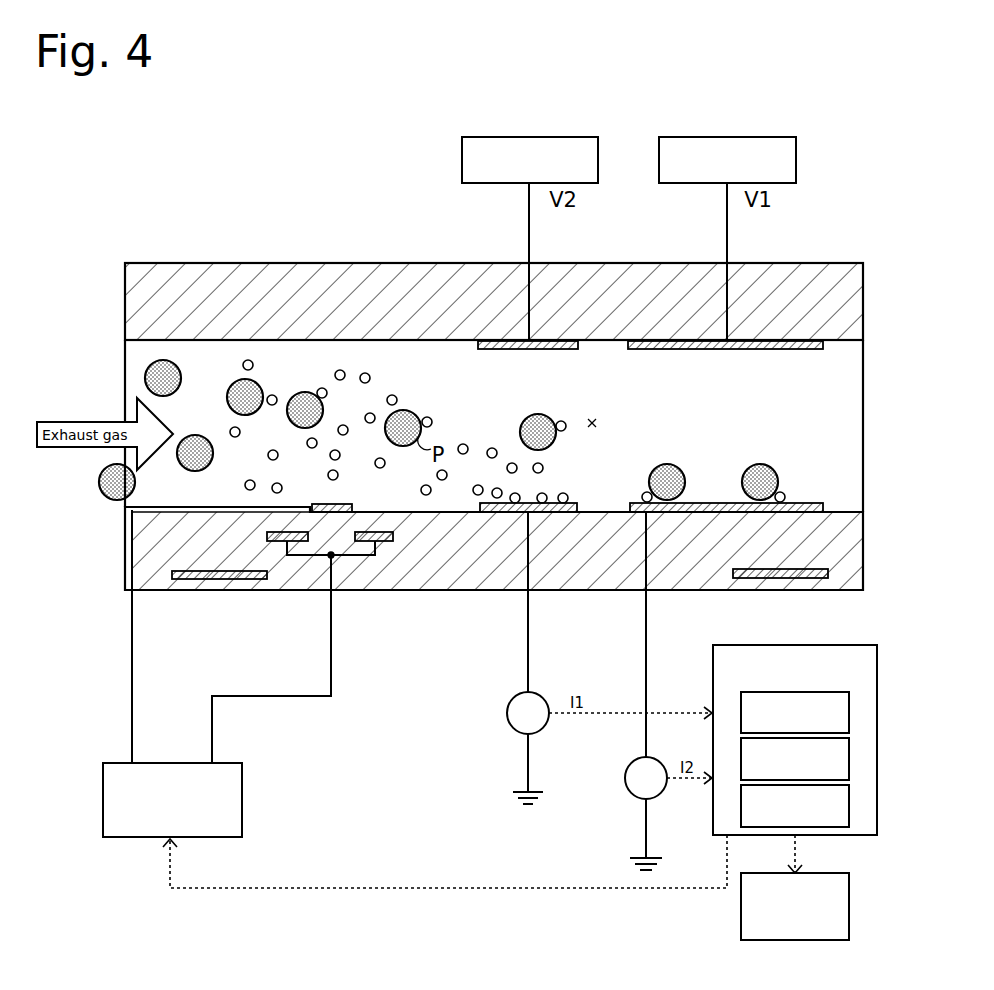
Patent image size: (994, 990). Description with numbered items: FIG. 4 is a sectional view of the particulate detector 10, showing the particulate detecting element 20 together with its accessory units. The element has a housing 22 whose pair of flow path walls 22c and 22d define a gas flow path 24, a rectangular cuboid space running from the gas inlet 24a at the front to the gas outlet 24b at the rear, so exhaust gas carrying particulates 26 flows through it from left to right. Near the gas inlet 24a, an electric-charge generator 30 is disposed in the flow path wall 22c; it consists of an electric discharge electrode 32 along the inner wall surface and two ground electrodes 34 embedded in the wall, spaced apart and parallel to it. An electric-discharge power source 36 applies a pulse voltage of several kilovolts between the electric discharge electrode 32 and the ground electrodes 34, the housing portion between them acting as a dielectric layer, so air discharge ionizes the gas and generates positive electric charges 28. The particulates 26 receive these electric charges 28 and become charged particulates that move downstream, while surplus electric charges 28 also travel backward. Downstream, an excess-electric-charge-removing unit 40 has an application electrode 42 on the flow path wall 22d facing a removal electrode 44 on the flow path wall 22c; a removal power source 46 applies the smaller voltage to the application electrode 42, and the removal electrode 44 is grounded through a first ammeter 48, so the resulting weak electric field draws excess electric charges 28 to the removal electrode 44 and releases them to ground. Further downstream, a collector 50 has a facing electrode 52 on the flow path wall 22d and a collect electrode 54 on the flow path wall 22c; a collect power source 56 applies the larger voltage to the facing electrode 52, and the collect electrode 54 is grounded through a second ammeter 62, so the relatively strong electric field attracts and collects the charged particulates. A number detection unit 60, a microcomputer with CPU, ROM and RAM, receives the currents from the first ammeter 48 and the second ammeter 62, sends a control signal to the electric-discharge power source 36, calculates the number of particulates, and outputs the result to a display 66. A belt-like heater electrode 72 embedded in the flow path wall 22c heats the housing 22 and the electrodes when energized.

The particulate detector 10 is at (796, 124).
The particulate detecting element 20 is at (92, 586).
The housing 22 is at (227, 297).
The right flow path wall 22d is at (258, 303).
The left flow path wall 22c is at (410, 563).
The gas flow path 24 is at (592, 428).
The gas inlet 24a is at (125, 390).
The gas outlet 24b is at (865, 420).
The particulates 26 is at (227, 398).
The electric charges 28 is at (369, 374).
The electric-charge generator 30 is at (305, 582).
The electric discharge electrode 32 is at (323, 513).
The ground electrodes 34 is at (278, 541).
The electric-discharge power source 36 is at (242, 797).
The excess-electric-charge-removing unit 40 is at (534, 349).
The application electrode 42 is at (515, 341).
The removal electrode 44 is at (500, 503).
The removal power source 46 is at (598, 160).
The first ammeter 48 is at (507, 713).
The collector 50 is at (725, 349).
The facing electrode 52 is at (717, 341).
The collect electrode 54 is at (668, 503).
The collect power source 56 is at (796, 160).
The number detection unit 60 is at (860, 645).
The second ammeter 62 is at (625, 778).
The display 66 is at (849, 907).
The heater electrode 72 is at (185, 580).